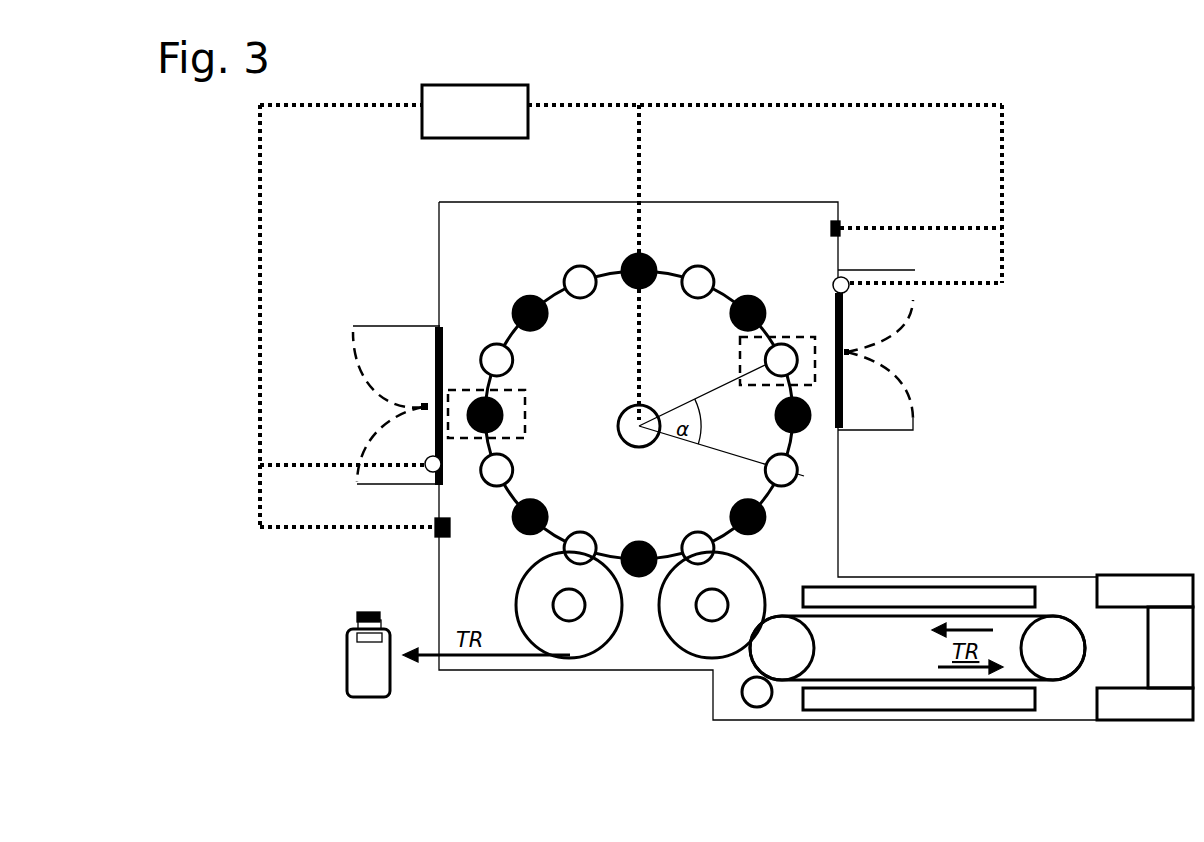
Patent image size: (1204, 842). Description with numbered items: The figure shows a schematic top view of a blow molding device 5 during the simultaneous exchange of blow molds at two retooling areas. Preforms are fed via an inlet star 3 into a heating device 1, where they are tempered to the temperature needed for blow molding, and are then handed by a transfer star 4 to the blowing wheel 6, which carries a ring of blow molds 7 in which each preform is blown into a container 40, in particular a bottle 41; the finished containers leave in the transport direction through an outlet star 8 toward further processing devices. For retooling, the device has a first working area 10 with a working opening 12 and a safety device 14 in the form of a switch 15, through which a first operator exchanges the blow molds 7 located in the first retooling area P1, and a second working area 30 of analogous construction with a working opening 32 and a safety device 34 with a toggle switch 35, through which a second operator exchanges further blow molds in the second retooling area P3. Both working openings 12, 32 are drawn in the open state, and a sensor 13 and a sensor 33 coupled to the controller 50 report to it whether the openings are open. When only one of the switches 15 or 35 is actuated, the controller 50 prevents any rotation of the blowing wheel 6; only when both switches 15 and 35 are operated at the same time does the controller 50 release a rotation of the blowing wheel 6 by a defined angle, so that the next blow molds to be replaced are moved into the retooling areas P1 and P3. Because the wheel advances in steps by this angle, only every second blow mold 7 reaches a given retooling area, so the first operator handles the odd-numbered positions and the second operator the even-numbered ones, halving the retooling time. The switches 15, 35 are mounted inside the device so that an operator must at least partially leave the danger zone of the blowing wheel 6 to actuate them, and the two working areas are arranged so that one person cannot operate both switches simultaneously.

The heating device 1 is at (971, 647).
The inlet star 3 is at (753, 698).
The transfer star 4 is at (712, 605).
The blow molding device 5 is at (230, 573).
The blowing wheel 6 is at (639, 415).
The blow mold 7 is at (580, 280).
The outlet star 8 is at (569, 605).
The first working area 10 is at (959, 360).
The working opening 12 is at (913, 348).
The sensor 13 is at (848, 282).
The safety device 14 is at (875, 194).
The toggle switch 15 is at (836, 221).
The second working area 30 is at (358, 406).
The working opening 32 is at (360, 416).
The sensor 33 is at (432, 472).
The safety device 34 is at (405, 560).
The toggle switch 35 is at (437, 540).
The container 40 is at (324, 679).
The bottle 41 is at (352, 698).
The controller 50 is at (475, 111).
The first retooling area P1 is at (793, 342).
The second retooling area P3 is at (514, 400).